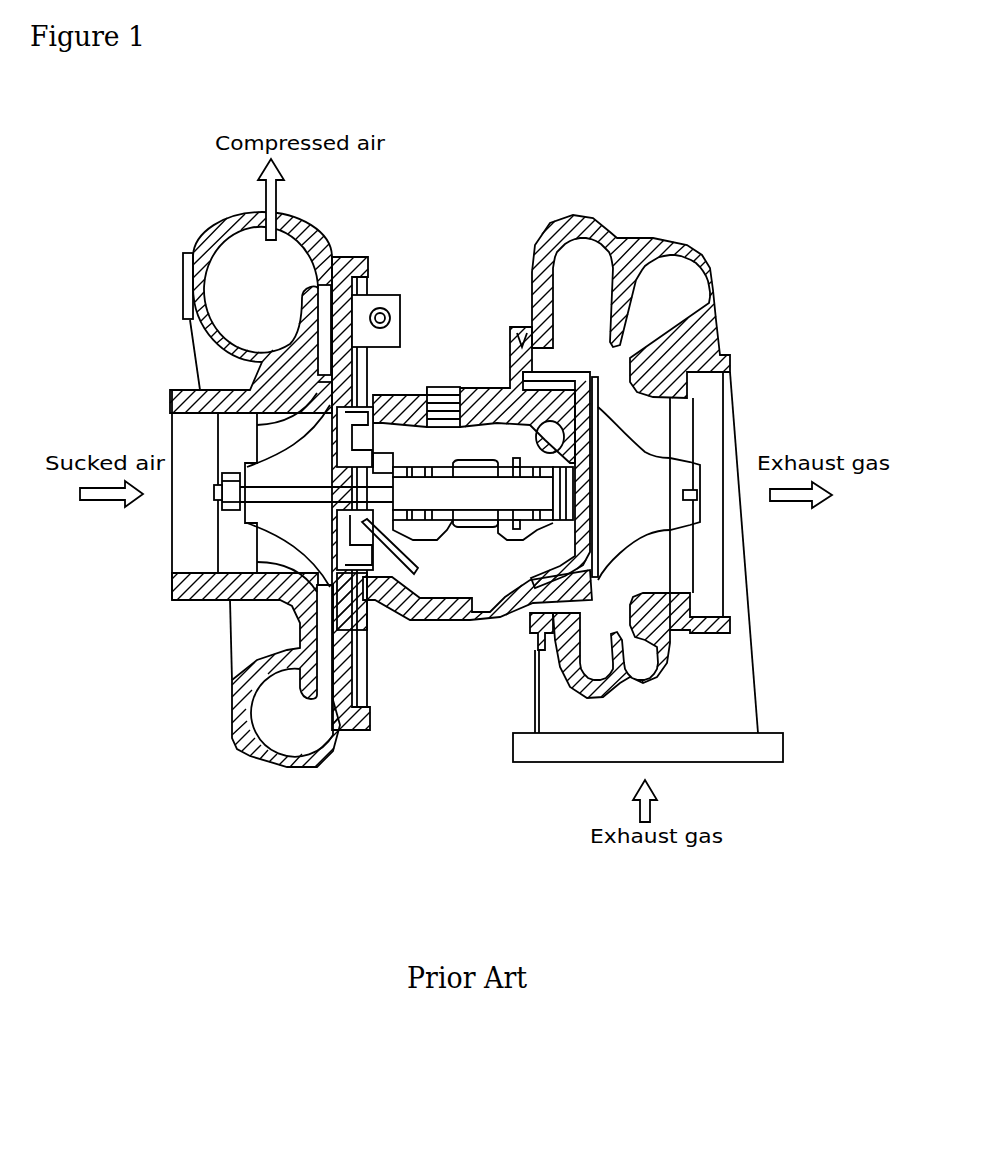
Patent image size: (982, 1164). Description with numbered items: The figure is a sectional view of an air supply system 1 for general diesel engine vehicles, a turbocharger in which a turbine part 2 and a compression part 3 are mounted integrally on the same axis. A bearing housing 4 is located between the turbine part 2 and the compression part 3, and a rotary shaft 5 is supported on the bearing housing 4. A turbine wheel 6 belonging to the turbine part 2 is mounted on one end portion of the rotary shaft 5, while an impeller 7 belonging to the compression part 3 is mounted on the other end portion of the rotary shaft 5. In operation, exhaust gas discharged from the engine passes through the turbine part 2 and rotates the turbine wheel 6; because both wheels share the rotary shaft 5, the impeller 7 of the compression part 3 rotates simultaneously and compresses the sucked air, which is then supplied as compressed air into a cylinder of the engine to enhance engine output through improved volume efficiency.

The air supply system 1 is at (183, 193).
The turbine part 2 is at (711, 254).
The compression part 3 is at (184, 277).
The bearing housing 4 is at (398, 395).
The rotary shaft 5 is at (467, 486).
The turbine wheel 6 is at (672, 513).
The impeller 7 is at (290, 522).